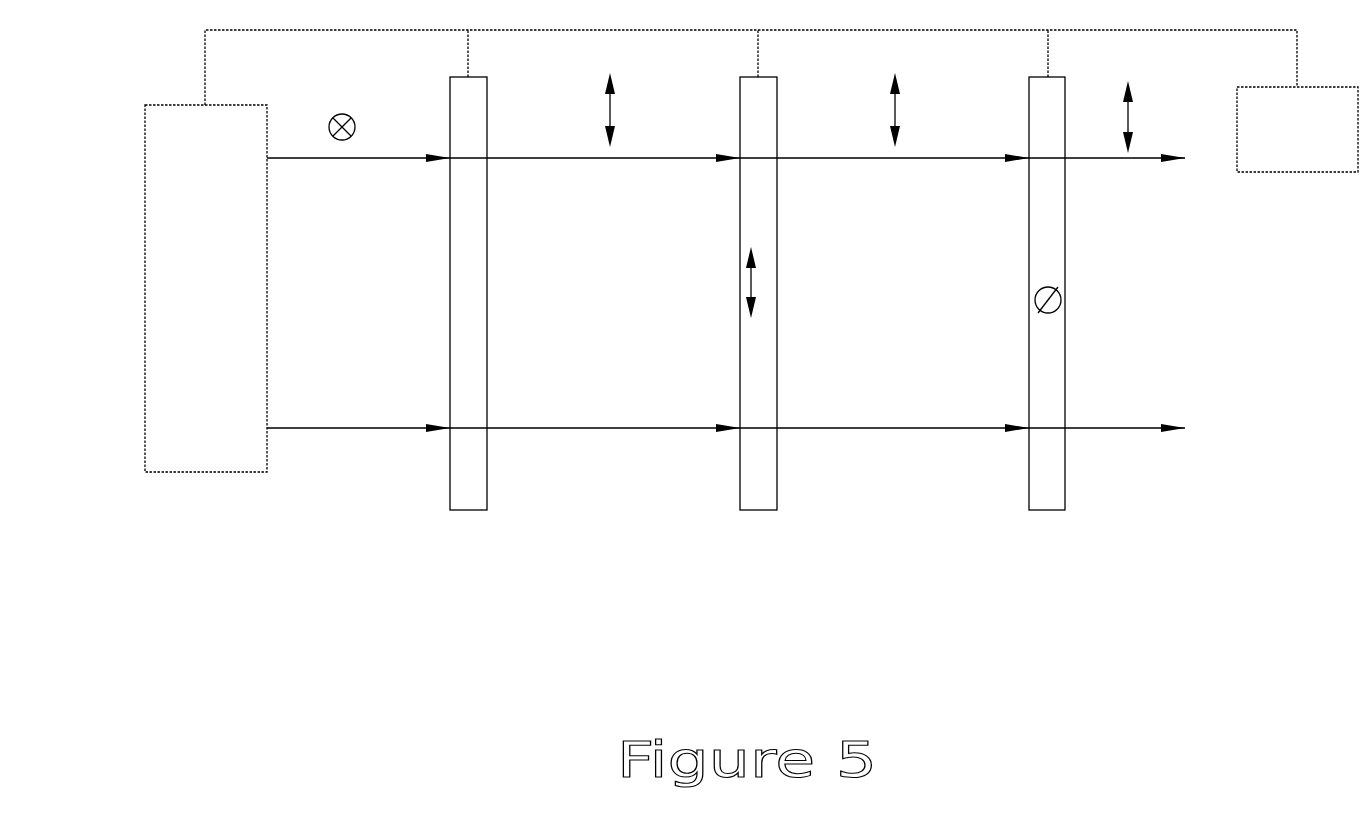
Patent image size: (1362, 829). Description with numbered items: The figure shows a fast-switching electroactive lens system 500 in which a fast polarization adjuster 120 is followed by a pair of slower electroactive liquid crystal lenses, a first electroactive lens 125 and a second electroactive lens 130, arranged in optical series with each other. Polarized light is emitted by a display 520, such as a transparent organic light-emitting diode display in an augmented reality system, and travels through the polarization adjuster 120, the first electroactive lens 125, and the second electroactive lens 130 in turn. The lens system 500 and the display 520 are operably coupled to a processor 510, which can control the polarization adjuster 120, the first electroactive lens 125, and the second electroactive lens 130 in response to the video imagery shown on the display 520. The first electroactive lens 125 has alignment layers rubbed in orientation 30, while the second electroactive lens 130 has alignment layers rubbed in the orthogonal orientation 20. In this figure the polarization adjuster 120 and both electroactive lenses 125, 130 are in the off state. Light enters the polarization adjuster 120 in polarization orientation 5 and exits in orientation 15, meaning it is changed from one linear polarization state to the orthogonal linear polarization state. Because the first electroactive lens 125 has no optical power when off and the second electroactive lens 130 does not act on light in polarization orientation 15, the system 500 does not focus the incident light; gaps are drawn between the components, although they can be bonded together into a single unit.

The polarization orientation 5 is at (357, 110).
The polarization orientation 15 is at (623, 88).
The rub orientation of second electroactive lens alignment layers 20 is at (1058, 287).
The rub orientation of first electroactive lens alignment layers 30 is at (768, 257).
The polarization adjuster 120 is at (472, 518).
The first electroactive lens 125 is at (757, 518).
The second electroactive lens 130 is at (1050, 513).
The fast-switching electroactive lens system 500 is at (330, 528).
The processor 510 is at (1297, 129).
The display 520 is at (206, 288).